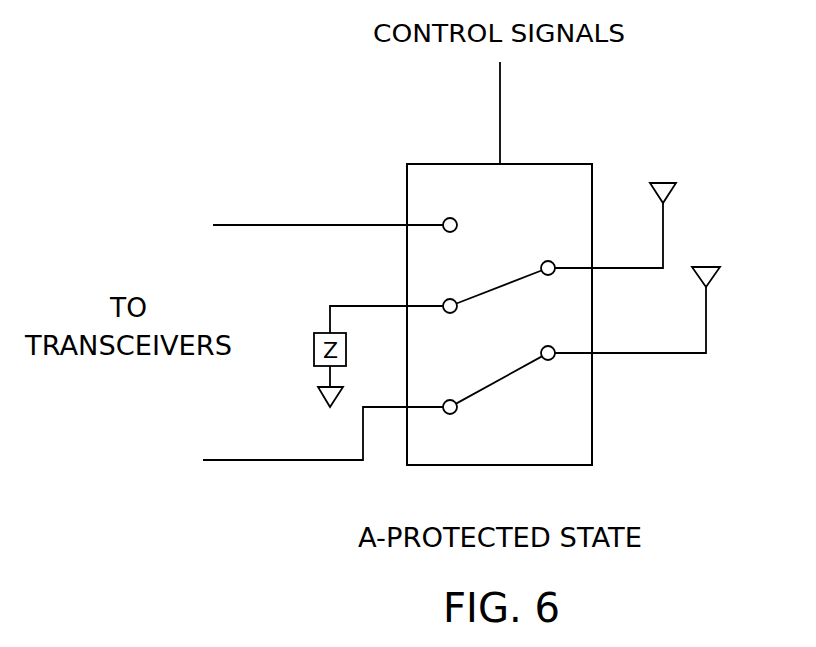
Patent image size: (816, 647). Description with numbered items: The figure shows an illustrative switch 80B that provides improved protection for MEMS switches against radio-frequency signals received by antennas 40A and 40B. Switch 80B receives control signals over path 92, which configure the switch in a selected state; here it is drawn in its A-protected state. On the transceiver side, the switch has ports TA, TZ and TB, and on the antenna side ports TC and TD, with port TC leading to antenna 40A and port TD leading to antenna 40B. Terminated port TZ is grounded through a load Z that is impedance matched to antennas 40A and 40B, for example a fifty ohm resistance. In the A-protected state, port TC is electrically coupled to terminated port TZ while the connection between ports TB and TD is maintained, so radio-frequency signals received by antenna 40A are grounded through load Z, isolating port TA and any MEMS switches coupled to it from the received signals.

The path 92 is at (501, 86).
The switch 80B is at (552, 163).
The antenna 40A is at (663, 183).
The antenna 40B is at (706, 267).